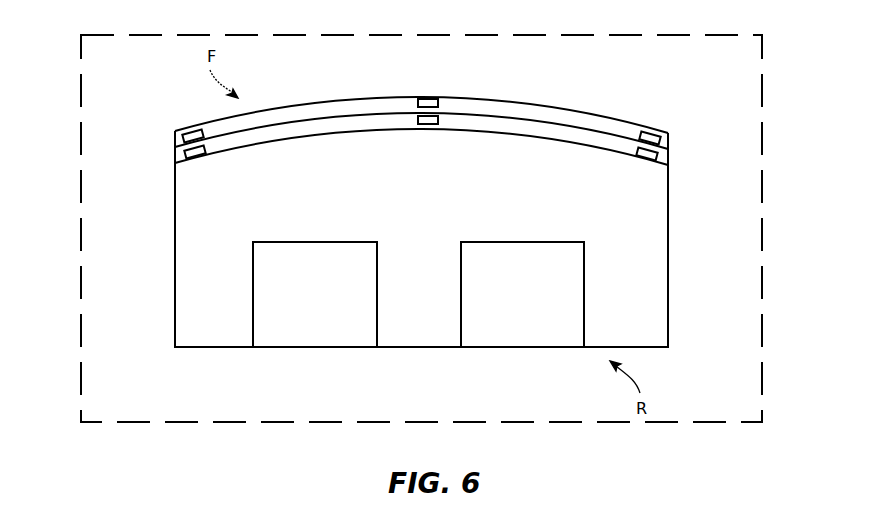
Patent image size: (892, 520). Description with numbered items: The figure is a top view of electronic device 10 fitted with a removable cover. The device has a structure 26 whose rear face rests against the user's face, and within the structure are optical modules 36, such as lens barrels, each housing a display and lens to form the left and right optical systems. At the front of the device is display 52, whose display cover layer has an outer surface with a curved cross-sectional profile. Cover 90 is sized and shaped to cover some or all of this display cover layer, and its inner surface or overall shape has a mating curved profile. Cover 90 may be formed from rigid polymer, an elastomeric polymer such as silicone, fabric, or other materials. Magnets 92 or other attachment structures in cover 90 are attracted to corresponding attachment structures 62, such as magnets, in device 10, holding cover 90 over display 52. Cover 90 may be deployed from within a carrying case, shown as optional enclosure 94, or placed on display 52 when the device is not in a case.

The electronic device 10 is at (156, 297).
The structure 26 is at (668, 243).
The optical module 36 is at (461, 288).
The display 52 is at (276, 141).
The attachment structures 62 is at (196, 157).
The cover 90 is at (546, 104).
The magnets 92 is at (192, 131).
The enclosure 94 is at (762, 138).